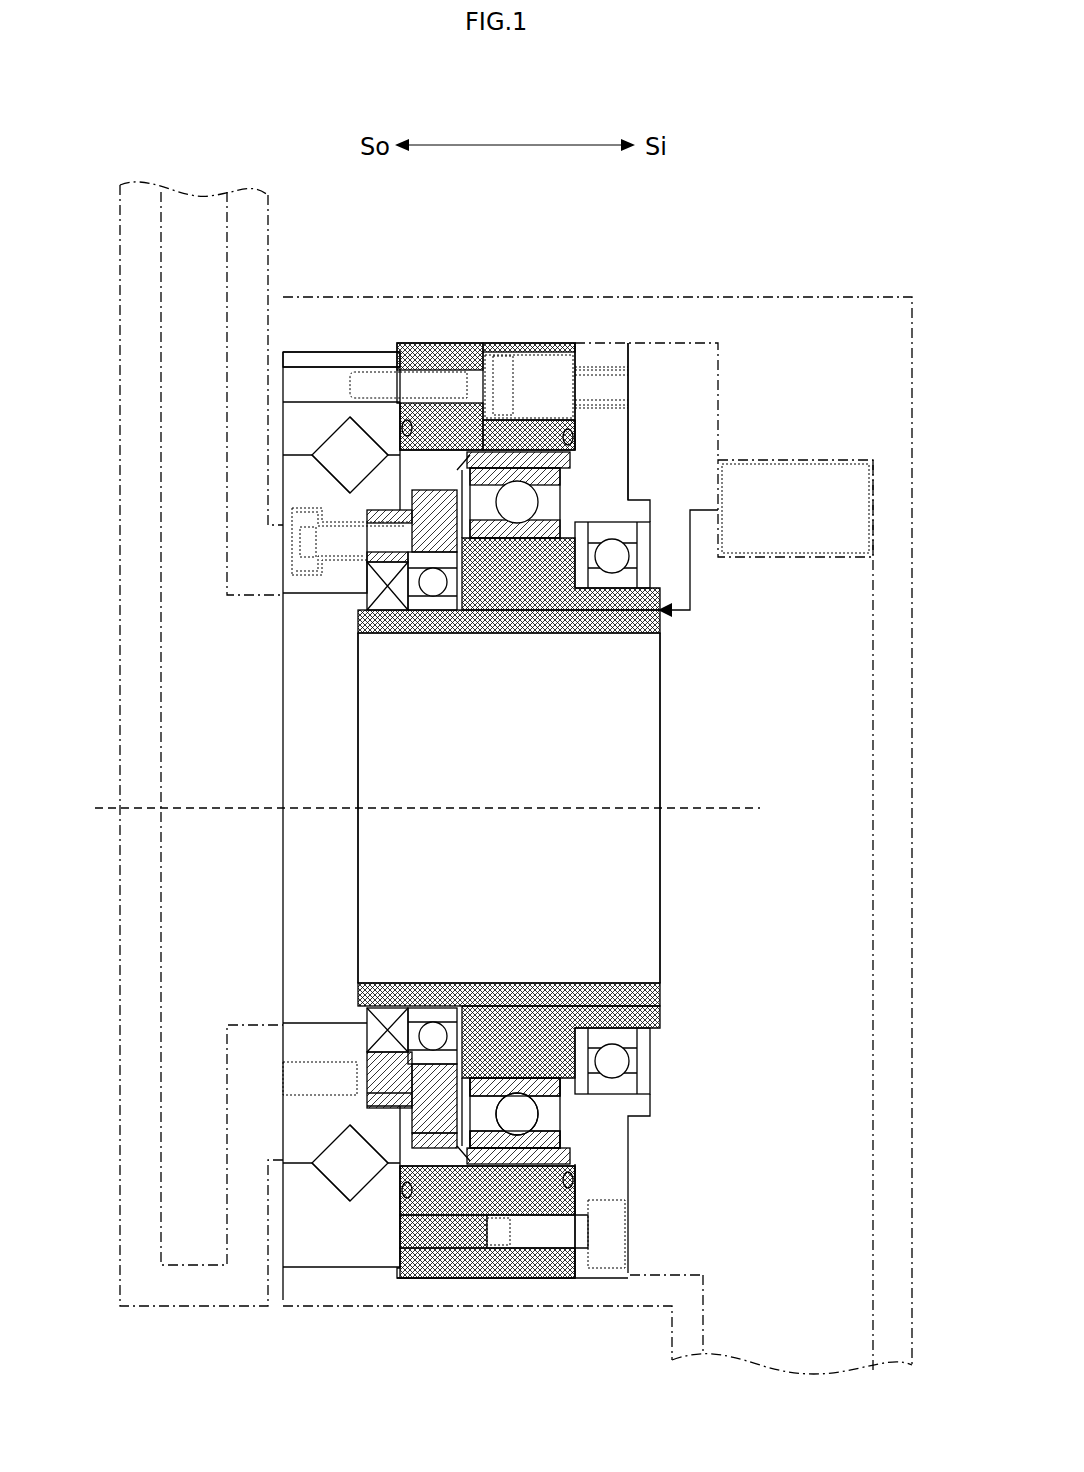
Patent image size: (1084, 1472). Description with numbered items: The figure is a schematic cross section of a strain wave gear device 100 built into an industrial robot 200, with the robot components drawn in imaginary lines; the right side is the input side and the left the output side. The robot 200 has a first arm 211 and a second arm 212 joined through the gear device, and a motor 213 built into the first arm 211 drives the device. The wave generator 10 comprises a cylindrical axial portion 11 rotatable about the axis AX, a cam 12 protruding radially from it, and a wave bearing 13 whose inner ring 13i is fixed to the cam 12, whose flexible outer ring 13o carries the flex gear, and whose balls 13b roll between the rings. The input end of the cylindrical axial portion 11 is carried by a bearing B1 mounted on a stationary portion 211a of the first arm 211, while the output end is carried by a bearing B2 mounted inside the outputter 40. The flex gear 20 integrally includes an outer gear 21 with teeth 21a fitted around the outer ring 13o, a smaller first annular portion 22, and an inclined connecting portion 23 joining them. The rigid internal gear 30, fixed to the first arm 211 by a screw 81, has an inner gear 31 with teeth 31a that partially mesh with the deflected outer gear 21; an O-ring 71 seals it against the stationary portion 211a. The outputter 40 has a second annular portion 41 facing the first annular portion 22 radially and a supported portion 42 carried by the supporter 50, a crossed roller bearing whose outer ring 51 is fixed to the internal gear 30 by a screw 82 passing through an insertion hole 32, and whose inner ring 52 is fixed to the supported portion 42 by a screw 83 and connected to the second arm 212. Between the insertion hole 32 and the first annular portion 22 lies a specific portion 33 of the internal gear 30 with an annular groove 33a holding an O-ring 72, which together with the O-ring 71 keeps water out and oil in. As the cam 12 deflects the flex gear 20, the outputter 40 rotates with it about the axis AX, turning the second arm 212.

The strain wave gear device 100 is at (708, 856).
The wave generator 10 is at (662, 1000).
The cylindrical axial portion 11 is at (655, 640).
The cam 12 is at (535, 577).
The wave bearing 13 is at (563, 502).
The inner ring 13i is at (578, 1090).
The balls 13b is at (540, 1116).
The outer ring 13o is at (560, 1145).
The flex gear 20 is at (576, 1155).
The outer gear 21 is at (582, 457).
The teeth 21a is at (553, 392).
The first annular portion 22 is at (428, 415).
The connecting portion 23 is at (455, 420).
The internal gear 30 is at (577, 1195).
The inner gear 31 is at (494, 360).
The teeth 31a is at (515, 362).
The insertion hole 32 is at (393, 362).
The specific portion 33 is at (295, 400).
The annular groove 33a is at (292, 383).
The outputter 40 is at (390, 498).
The second annular portion 41 is at (458, 560).
The supported portion 42 is at (390, 518).
The supporter 50 is at (345, 430).
The outer ring 51 is at (310, 440).
The inner ring 52 is at (320, 470).
The O-ring 71 is at (590, 400).
The O-ring 72 is at (383, 438).
The screw 81 is at (605, 1233).
The screw 82 is at (402, 428).
The screw 83 is at (305, 534).
The industrial robot 200 is at (898, 284).
The first arm 211 is at (792, 296).
The stationary portion 211a is at (630, 443).
The second arm 212 is at (120, 668).
The motor 213 is at (790, 558).
The bearing B1 is at (612, 548).
The bearing B2 is at (368, 606).
The axis AX is at (405, 809).